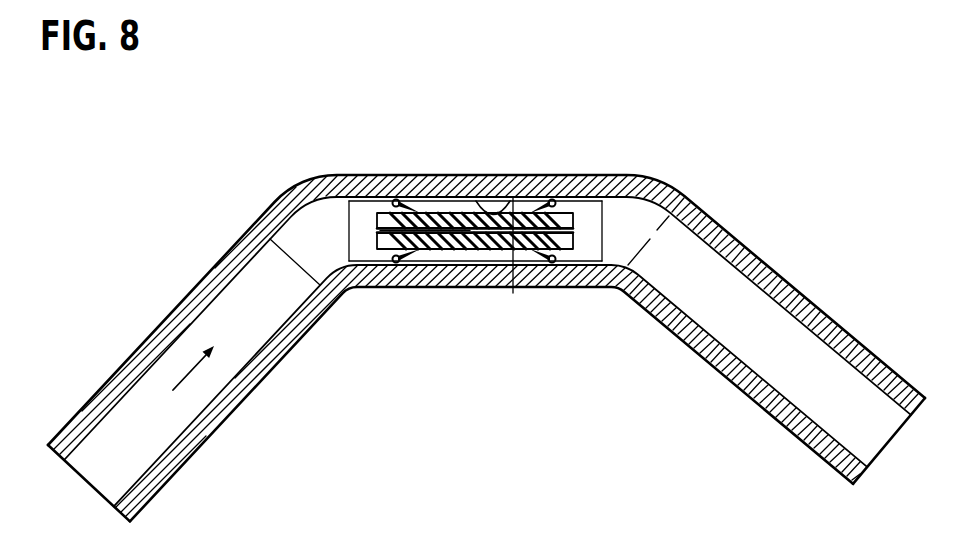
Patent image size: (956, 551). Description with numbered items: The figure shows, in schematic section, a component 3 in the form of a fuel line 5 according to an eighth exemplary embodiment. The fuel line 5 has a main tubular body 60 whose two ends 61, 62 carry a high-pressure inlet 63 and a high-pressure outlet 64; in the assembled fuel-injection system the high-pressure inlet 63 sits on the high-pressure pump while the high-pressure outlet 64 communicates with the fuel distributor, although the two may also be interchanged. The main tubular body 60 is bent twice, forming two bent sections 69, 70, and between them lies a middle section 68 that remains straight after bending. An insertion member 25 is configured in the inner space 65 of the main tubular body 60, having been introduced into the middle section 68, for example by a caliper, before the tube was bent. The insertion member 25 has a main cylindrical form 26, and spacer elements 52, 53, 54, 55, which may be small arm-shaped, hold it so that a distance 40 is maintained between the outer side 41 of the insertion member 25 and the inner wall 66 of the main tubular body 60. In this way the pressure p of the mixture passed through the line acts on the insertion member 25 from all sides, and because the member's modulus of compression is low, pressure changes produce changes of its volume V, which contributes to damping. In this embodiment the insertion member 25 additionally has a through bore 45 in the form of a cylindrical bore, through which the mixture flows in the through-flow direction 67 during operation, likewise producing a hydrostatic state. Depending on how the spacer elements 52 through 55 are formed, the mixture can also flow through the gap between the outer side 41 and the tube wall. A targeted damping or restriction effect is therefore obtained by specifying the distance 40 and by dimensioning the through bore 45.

The component 3 is at (136, 199).
The fuel line 5 is at (136, 199).
The insertion member 25 is at (465, 249).
The main cylindrical form 26 is at (443, 250).
The distance 40 is at (513, 256).
The outer side 41 is at (462, 212).
The through bore 45 is at (389, 226).
The spacer element 52 is at (397, 199).
The spacer element 53 is at (394, 263).
The spacer element 54 is at (556, 201).
The spacer element 55 is at (554, 263).
The main tubular body 60 is at (757, 268).
The end 61 is at (63, 438).
The end 62 is at (909, 396).
The high-pressure inlet 63 is at (63, 438).
The high-pressure outlet 64 is at (909, 396).
The inner space 65 is at (747, 338).
The inner wall 66 is at (505, 200).
The through-flow direction 67 is at (210, 398).
The middle section 68 is at (483, 249).
The bent section 69 is at (292, 190).
The bent section 70 is at (642, 192).
The pressure p is at (803, 373).
The volume V is at (510, 197).